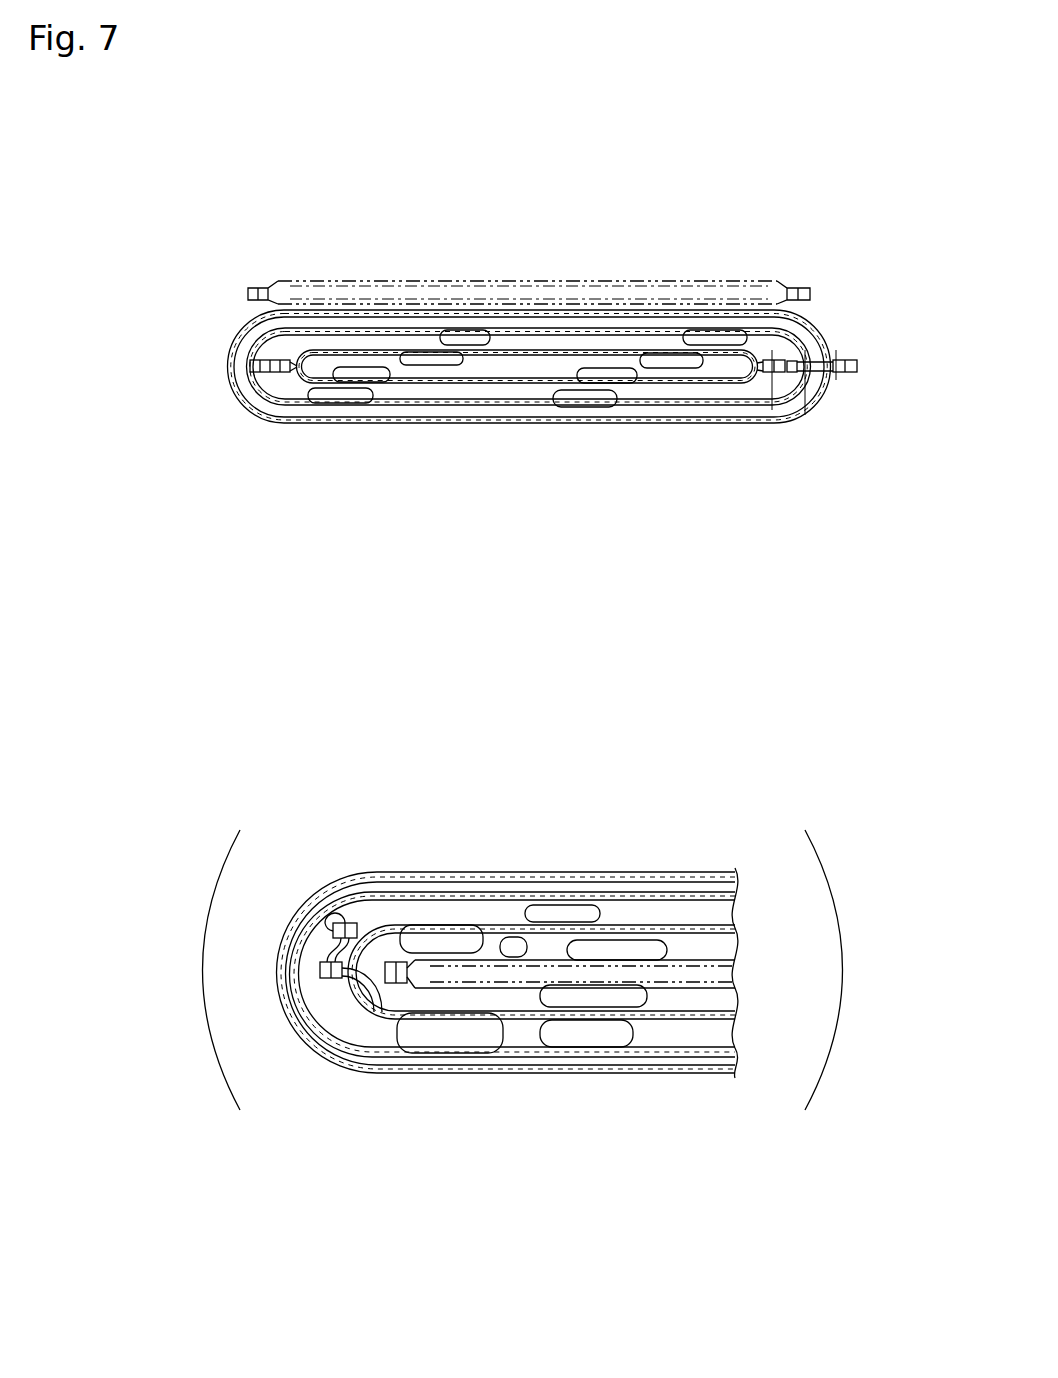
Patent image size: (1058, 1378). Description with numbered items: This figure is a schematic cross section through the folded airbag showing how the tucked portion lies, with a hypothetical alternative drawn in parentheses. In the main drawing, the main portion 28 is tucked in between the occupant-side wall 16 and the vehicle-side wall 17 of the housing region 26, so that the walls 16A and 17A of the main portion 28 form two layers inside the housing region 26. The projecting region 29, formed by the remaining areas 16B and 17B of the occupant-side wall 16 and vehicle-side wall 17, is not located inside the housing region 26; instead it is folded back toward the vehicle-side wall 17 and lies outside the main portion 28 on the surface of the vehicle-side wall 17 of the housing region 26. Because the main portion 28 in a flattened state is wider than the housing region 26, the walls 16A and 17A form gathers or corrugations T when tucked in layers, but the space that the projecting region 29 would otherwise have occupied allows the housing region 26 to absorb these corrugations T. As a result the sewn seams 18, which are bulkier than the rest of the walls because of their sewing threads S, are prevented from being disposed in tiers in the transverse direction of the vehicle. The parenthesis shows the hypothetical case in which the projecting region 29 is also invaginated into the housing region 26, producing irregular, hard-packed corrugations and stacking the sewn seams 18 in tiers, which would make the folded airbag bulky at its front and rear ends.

The occupant-side wall 16 is at (640, 1077).
The wall of the main portion 16A is at (428, 385).
The area of the occupant-side wall 16B is at (526, 424).
The vehicle-side wall 17 is at (515, 870).
The wall of the main portion 17A is at (343, 350).
The area of the vehicle-side wall 17B is at (612, 300).
The sewn seams 18 is at (805, 352).
The housing region 26 is at (727, 298).
The main portion 28 is at (722, 422).
The projecting region 29 is at (538, 272).
The sewing threads S is at (285, 332).
The corrugations T is at (455, 345).